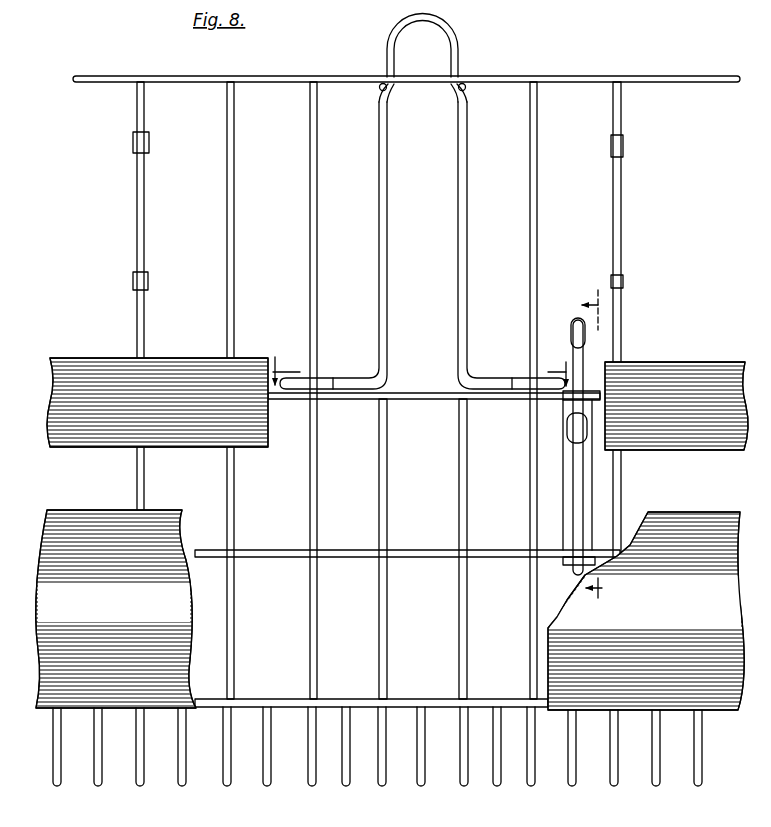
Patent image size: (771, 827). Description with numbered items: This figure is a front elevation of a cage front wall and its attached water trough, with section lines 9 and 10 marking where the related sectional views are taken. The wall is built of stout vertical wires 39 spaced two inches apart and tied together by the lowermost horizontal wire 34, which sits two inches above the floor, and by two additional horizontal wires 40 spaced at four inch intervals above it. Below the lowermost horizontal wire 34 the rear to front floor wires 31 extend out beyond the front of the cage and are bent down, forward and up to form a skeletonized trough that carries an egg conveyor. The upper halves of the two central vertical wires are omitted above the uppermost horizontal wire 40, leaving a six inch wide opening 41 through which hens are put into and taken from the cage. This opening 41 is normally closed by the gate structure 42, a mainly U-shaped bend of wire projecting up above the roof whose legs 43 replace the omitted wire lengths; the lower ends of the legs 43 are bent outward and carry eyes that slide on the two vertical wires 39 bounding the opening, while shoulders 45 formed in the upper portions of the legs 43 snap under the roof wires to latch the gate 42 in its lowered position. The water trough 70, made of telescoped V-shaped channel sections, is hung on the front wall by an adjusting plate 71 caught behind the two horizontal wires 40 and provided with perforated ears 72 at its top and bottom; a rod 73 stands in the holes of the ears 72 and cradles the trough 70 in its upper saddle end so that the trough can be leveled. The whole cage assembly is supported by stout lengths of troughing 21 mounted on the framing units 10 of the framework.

The section line 9- 9 is at (596, 453).
The framing units 10 is at (422, 369).
The troughing 21 is at (680, 530).
The rear to front wires 31 is at (186, 768).
The lowermost horizontal wire 34 is at (400, 697).
The vertical wires 39 is at (309, 203).
The horizontal wires 40 is at (414, 401).
The opening 41 is at (422, 400).
The gate structure 42 is at (468, 44).
The legs 43 is at (377, 226).
The shoulders 45 is at (387, 91).
The water trough 70 is at (180, 375).
The adjusting plate 71 is at (563, 476).
The ears 72 is at (586, 378).
The rod 73 is at (571, 348).